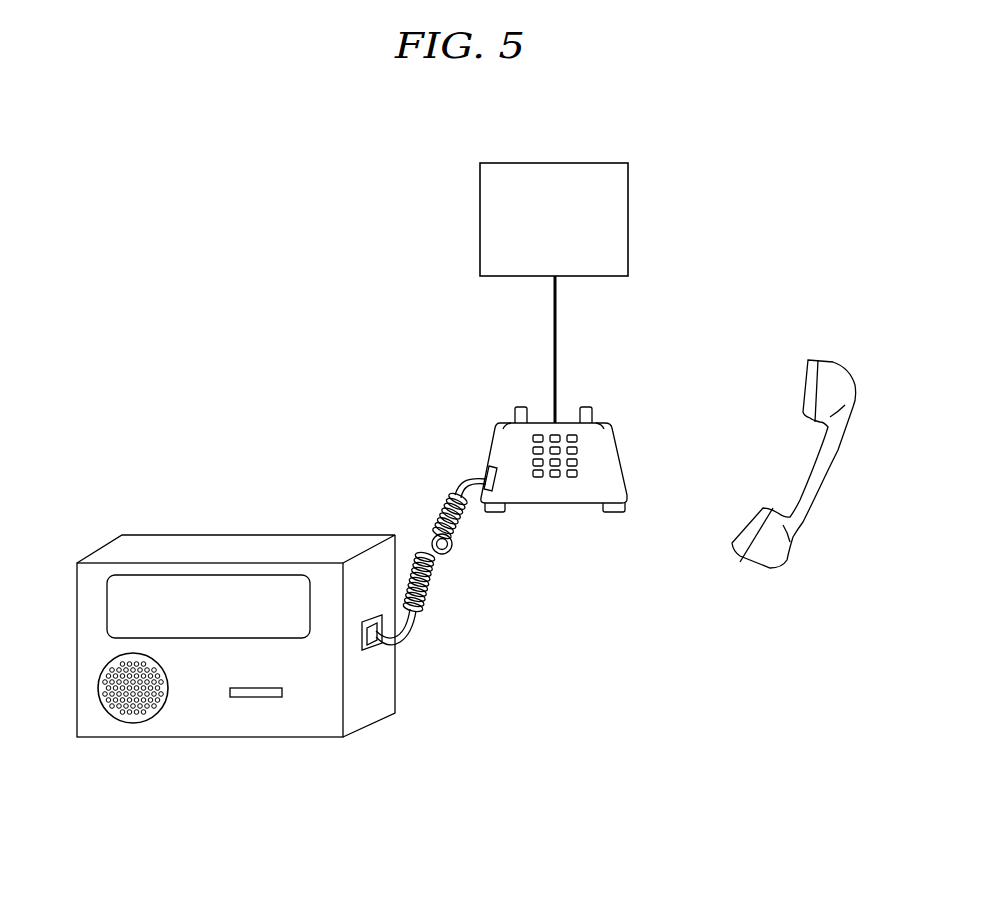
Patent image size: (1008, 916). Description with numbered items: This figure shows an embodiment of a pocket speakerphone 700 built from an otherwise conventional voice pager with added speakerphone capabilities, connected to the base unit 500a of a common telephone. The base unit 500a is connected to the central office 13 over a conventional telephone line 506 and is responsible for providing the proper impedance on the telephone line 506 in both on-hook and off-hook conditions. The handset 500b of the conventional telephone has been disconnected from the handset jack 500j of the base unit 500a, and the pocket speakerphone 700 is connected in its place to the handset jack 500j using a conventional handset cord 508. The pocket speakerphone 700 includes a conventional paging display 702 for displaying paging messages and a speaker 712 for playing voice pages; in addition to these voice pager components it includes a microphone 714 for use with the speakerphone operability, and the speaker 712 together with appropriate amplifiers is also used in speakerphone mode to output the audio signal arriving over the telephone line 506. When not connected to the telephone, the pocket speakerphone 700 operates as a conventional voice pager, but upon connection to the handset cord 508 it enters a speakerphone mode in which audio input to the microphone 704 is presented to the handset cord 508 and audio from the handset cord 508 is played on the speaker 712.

The central office 13 is at (628, 220).
The telephone line 506 is at (556, 350).
The base unit 500a is at (555, 505).
The handset 500b is at (838, 480).
The handset jack 500j is at (491, 470).
The handset cord 508 is at (435, 573).
The pocket speakerphone 700 is at (370, 720).
The paging display 702 is at (107, 605).
The microphone 704 is at (368, 650).
The speaker 712 is at (133, 723).
The microphone 714 is at (258, 700).